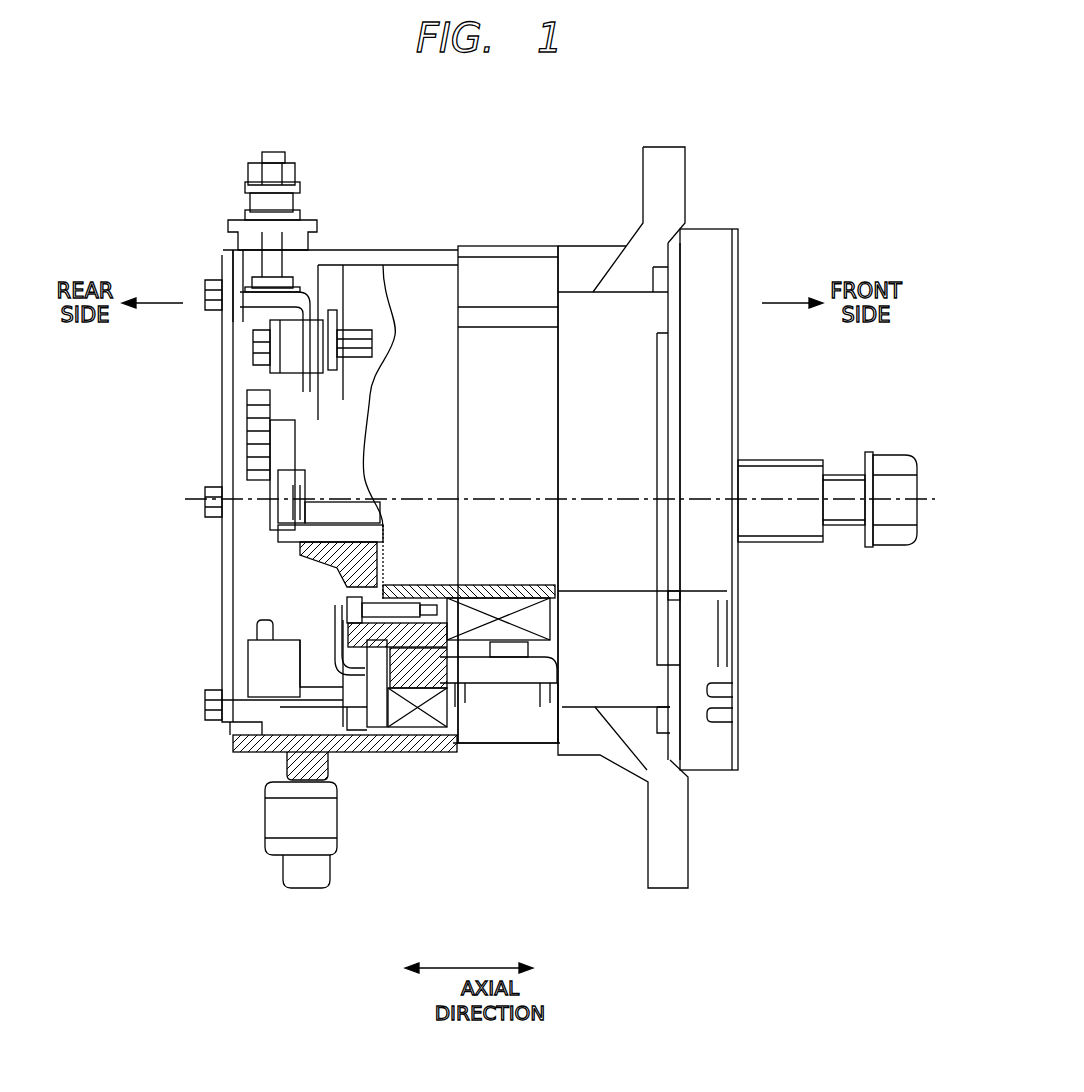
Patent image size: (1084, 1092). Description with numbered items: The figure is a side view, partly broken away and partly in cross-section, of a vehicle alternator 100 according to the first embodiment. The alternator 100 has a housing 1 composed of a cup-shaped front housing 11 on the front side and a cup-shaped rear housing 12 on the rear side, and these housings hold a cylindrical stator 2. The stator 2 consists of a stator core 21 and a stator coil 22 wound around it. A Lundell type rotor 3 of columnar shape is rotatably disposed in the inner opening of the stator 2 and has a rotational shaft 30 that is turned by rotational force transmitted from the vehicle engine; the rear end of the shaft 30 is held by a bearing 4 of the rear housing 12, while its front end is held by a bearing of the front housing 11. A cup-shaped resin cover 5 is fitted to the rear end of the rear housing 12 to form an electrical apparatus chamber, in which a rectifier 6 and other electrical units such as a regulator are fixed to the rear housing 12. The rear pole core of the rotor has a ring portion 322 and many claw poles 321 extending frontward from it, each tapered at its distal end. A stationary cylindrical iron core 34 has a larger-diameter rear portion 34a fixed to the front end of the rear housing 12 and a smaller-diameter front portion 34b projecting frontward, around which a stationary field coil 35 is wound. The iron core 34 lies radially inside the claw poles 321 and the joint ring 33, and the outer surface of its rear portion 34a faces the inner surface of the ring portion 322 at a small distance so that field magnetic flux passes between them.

The alternator 100 is at (728, 167).
The housing 1 is at (612, 245).
The stator 2 is at (497, 745).
The rotor 3 is at (480, 687).
The bearing 4 is at (303, 530).
The resin cover 5 is at (222, 423).
The rectifier 6 is at (272, 670).
The front housing 11 is at (603, 673).
The rear housing 12 is at (300, 761).
The stator core 21 is at (520, 730).
The stator coil 22 is at (400, 740).
The rotational shaft 30 is at (773, 478).
The joint ring 33 is at (552, 600).
The stationary iron core 34 is at (433, 587).
The larger-diameter rear portion 34a is at (395, 598).
The smaller-diameter front portion 34b is at (495, 607).
The stationary field coil 35 is at (512, 650).
The claw poles 321 is at (400, 708).
The ring portion 322 is at (463, 598).